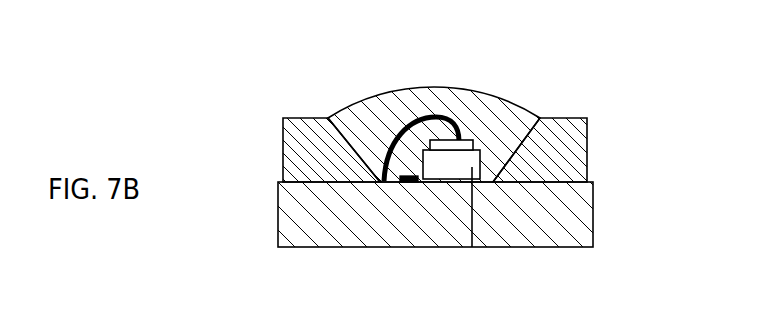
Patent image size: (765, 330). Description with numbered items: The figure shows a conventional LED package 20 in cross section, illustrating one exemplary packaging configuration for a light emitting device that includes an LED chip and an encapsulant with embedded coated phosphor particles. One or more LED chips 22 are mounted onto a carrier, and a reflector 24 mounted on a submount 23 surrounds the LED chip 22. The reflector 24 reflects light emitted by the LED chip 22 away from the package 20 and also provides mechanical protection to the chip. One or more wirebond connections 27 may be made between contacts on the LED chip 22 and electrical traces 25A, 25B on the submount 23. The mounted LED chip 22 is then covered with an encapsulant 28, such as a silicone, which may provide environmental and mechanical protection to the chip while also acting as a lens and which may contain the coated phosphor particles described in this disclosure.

The LED package 20 is at (421, 163).
The LED chip 22 is at (469, 167).
The submount 23 is at (277, 218).
The reflector 24 is at (282, 152).
The electrical trace 25A is at (383, 181).
The electrical trace 25B is at (472, 247).
The wirebond connection 27 is at (424, 117).
The outer encapsulant lens 28 is at (468, 88).